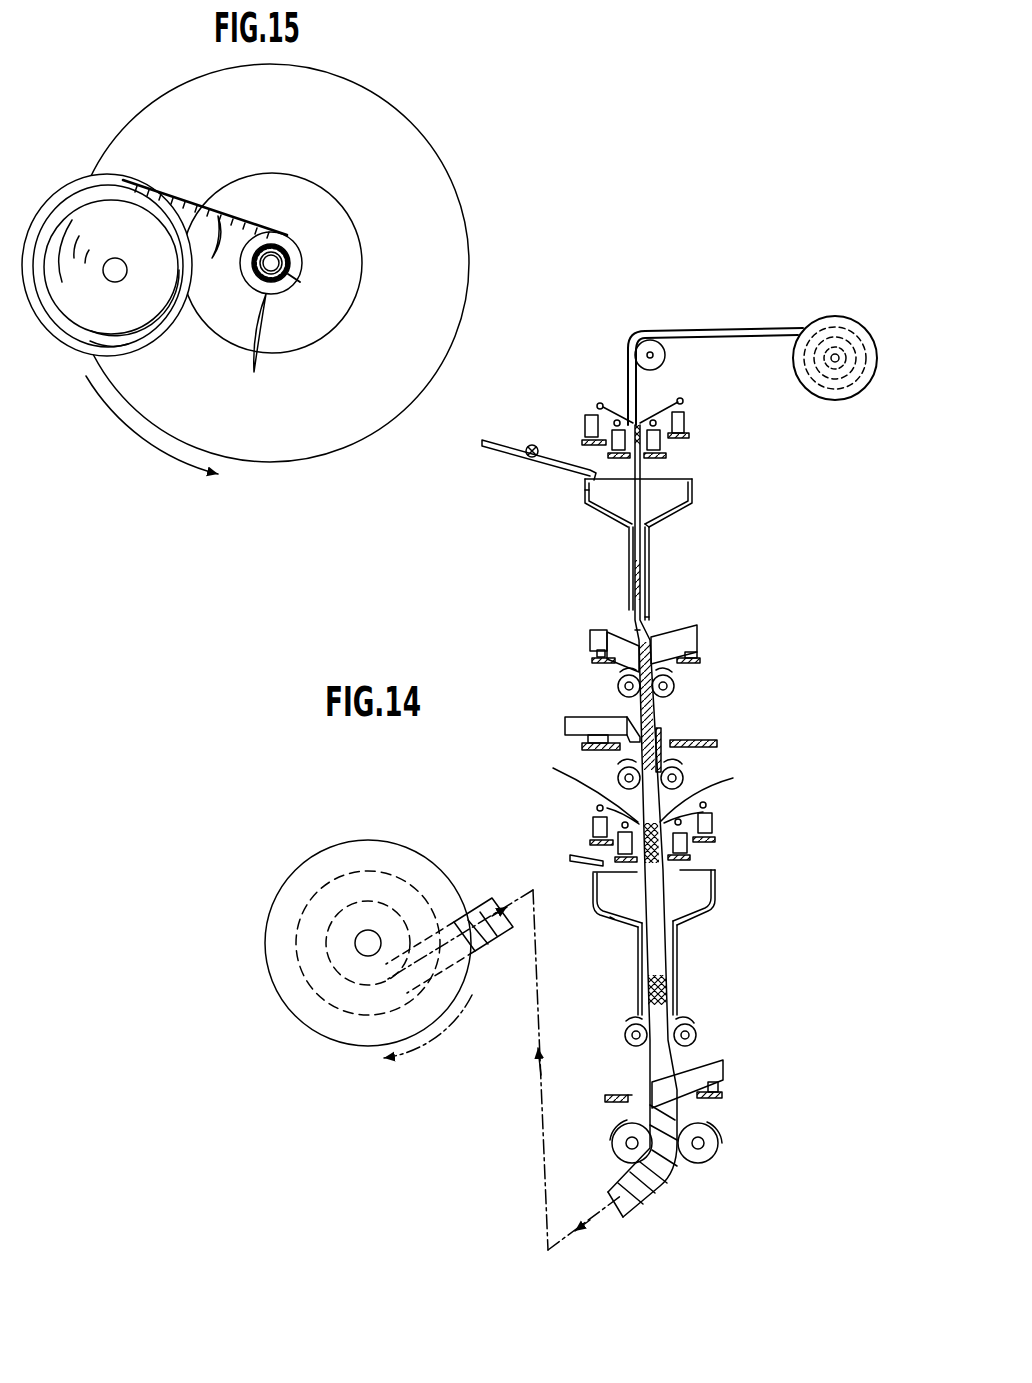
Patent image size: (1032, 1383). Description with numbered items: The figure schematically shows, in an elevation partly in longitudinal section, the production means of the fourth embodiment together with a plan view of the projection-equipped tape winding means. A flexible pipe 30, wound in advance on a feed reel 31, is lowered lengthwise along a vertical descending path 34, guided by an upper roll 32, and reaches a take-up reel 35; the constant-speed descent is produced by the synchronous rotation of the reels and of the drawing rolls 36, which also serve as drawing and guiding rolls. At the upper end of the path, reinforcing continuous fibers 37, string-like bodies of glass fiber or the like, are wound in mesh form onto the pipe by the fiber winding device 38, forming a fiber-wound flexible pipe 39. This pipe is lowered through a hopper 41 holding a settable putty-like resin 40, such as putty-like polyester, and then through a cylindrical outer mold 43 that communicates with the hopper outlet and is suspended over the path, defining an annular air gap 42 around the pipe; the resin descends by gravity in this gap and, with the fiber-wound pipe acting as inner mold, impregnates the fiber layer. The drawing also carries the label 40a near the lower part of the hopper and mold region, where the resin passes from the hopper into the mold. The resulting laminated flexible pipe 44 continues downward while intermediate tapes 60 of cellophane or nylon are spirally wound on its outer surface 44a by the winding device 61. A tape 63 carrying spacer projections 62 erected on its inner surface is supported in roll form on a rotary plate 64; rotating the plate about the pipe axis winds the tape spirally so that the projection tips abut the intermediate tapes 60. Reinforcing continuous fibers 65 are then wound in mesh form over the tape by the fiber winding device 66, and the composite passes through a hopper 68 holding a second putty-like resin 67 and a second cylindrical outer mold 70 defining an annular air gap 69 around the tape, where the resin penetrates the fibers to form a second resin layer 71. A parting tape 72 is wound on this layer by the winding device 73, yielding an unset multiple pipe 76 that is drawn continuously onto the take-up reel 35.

In FIG. 14, the flexible pipe 30 is at (753, 329).
In FIG. 14, the feed reel 31 is at (843, 317).
In FIG. 14, the upper roll 32 is at (665, 352).
In FIG. 14, the vertical descending path 34 is at (633, 543).
In FIG. 14, the take-up reel 35 is at (347, 1030).
In FIG. 14, the drawing rolls 36 is at (706, 1157).
In FIG. 14, the reinforcing continuous fibers 37 is at (627, 422).
In FIG. 14, the fiber winding device 38 is at (570, 418).
In FIG. 14, the fiber-wound flexible pipe 39 is at (645, 467).
In FIG. 14, the putty-like resin 40 is at (674, 498).
In FIG. 14, the funnel throat 40a is at (642, 520).
In FIG. 14, the hopper 41 is at (584, 498).
In FIG. 14, the annular air gap 42 is at (633, 570).
In FIG. 14, the cylindrical outer mold 43 is at (652, 575).
In FIG. 15, the laminated flexible pipe 44 is at (292, 278).
In FIG. 14, the laminated flexible pipe 44 is at (654, 617).
In FIG. 14, the outer surface of laminated flexible pipe 44a is at (637, 636).
In FIG. 15, the intermediate tape 60 is at (294, 246).
In FIG. 14, the intermediate tape 60 is at (683, 638).
In FIG. 14, the intermediate tape winding device 61 is at (588, 643).
In FIG. 15, the spacer projections 62 is at (260, 378).
In FIG. 15, the tape having spacer projections 63 is at (202, 193).
In FIG. 14, the tape having spacer projections 63 is at (648, 722).
In FIG. 15, the rotary plate 64 is at (330, 427).
In FIG. 14, the rotary plate 64 is at (718, 743).
In FIG. 14, the reinforcing continuous fibers 65 is at (646, 784).
In FIG. 14, the fiber winding device 66 is at (725, 827).
In FIG. 14, the putty-like resin 67 is at (689, 895).
In FIG. 14, the hopper 68 is at (613, 918).
In FIG. 14, the annular air gap 69 is at (645, 955).
In FIG. 14, the second cylindrical outer mold 70 is at (672, 967).
In FIG. 14, the second resin layer 71 is at (670, 1057).
In FIG. 14, the parting tape 72 is at (690, 1077).
In FIG. 14, the parting tape winding device 73 is at (732, 1091).
In FIG. 14, the unset multiple pipe 76 is at (659, 1194).